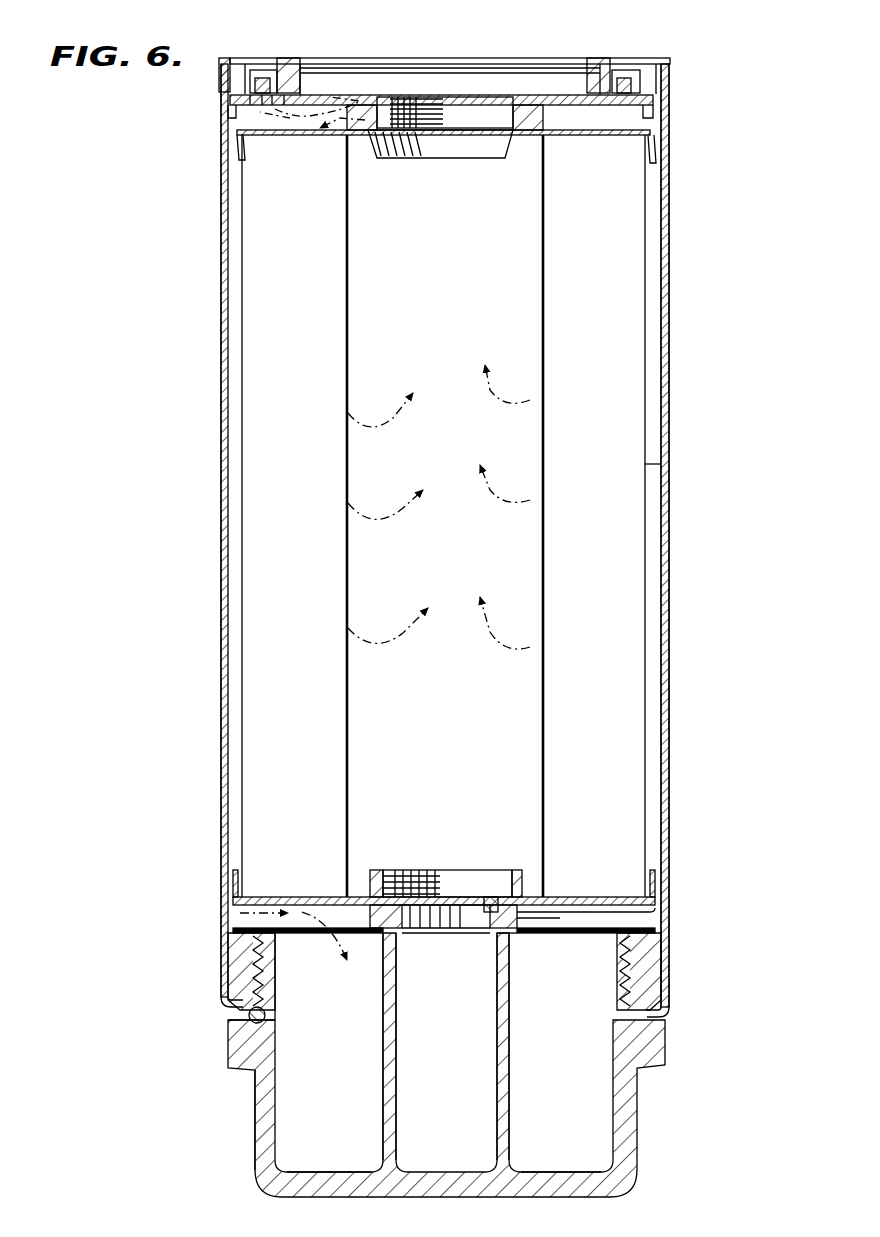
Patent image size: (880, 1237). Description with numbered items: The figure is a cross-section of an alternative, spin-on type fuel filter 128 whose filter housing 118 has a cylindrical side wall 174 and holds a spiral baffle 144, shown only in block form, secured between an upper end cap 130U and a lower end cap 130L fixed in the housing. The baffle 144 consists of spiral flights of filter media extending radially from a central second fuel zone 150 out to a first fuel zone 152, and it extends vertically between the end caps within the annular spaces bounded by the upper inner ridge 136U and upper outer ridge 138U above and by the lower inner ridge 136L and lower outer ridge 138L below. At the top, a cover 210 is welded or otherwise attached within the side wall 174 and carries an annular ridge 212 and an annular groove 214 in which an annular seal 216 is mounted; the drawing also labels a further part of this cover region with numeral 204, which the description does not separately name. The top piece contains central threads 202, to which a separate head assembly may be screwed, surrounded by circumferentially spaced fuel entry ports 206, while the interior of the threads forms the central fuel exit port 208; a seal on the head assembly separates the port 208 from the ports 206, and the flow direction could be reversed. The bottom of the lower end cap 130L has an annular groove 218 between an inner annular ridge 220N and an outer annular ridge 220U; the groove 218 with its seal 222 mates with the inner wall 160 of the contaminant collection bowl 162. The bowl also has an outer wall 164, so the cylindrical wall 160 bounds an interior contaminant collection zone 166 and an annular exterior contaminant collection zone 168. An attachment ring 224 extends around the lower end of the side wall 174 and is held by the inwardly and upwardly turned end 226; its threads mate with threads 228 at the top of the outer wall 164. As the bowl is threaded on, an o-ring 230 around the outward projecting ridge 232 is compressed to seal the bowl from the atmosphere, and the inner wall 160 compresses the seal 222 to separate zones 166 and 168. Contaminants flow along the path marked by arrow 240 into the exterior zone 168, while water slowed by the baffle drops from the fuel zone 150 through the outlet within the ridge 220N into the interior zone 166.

The filter housing 118 is at (672, 380).
The filter 128 is at (240, 232).
The upper end cap 130U is at (588, 134).
The lower end cap 130L is at (281, 897).
The upper inner ridge 136U is at (522, 158).
The lower inner ridge 136L is at (400, 881).
The upper outer ridge 138U is at (658, 148).
The lower outer ridge 138L is at (665, 906).
The baffle 144 is at (658, 464).
The second fuel zone 150 is at (463, 680).
The first fuel zone 152 is at (660, 513).
The inner wall 160 is at (499, 1045).
The contaminant collection bowl 162 is at (642, 1127).
The outer wall 164 is at (253, 1108).
The interior contaminant collection zone 166 is at (410, 1130).
The exterior contaminant collection zone 168 is at (589, 1147).
The side wall 174 is at (666, 416).
The threads 202 is at (489, 95).
The cover plate flange 204 is at (660, 105).
The fuel entry ports 206 is at (288, 93).
The central fuel exit port 208 is at (465, 103).
The cover 210 is at (646, 64).
The annular ridge 212 is at (628, 73).
The annular groove 214 is at (276, 105).
The annular seal 216 is at (282, 71).
The annular groove 218 is at (505, 896).
The outer annular ridge 220U is at (526, 913).
The inner annular ridge 220N is at (483, 932).
The seal 222 is at (517, 933).
The attachment ring 224 is at (250, 975).
The inwardly and upwardly turned end 226 is at (655, 1012).
The threads 228 is at (275, 973).
The o-ring 230 is at (248, 1012).
The annular outward projecting ridge 232 is at (230, 1038).
The contaminant flow path arrow 240 is at (242, 921).